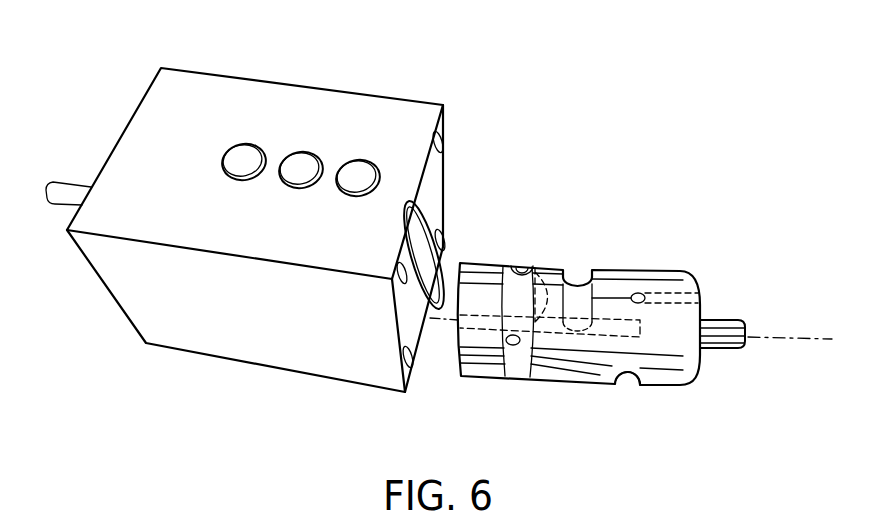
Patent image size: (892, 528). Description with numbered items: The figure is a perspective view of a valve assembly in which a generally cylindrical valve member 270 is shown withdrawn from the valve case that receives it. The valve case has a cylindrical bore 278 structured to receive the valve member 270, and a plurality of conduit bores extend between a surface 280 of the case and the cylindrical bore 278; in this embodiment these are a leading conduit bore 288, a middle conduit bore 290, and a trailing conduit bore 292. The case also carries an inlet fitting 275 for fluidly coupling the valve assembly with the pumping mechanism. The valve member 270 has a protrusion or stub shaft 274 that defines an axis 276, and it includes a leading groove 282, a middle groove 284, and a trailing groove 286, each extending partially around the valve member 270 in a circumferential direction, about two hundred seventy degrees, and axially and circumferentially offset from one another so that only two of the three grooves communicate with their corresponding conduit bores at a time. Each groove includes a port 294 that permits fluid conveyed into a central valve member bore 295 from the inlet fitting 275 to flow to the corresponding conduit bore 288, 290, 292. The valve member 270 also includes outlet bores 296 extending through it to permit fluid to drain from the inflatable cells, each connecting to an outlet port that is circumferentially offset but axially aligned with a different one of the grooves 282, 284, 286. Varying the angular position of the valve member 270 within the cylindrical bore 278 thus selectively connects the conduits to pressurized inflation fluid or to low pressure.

The valve member 270 is at (652, 276).
The stub shaft 274 is at (730, 350).
The inlet fitting 275 is at (68, 188).
The axis 276 is at (792, 336).
The cylindrical bore 278 is at (425, 222).
The surface 280 is at (192, 82).
The leading groove 282 is at (632, 388).
The middle groove 284 is at (576, 277).
The trailing groove 286 is at (511, 366).
The leading conduit bore 288 is at (346, 166).
The middle conduit bore 290 is at (286, 158).
The trailing conduit bore 292 is at (228, 150).
The port 294 is at (526, 340).
The central valve member bore 295 is at (541, 259).
The outlet bores 296 is at (702, 299).